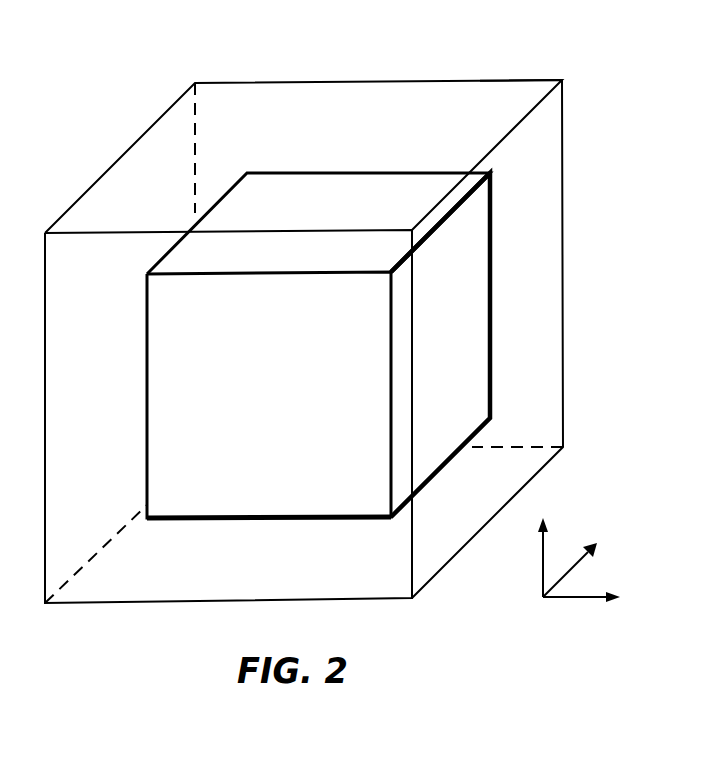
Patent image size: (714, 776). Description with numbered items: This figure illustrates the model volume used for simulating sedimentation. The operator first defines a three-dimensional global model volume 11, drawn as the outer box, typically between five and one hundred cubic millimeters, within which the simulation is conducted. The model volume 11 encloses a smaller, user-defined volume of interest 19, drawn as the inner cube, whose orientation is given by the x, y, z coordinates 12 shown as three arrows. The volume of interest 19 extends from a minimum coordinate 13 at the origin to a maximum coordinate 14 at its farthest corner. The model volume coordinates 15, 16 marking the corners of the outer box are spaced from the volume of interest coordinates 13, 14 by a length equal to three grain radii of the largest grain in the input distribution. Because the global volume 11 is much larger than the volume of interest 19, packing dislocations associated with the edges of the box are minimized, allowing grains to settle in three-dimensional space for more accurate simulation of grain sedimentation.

The model volume 11 is at (562, 220).
The x, y, z coordinates 12 is at (562, 597).
The minimum coordinate 13 is at (148, 520).
The maximum coordinate 14 is at (490, 173).
The model volume coordinate 15 is at (45, 603).
The model volume coordinate 16 is at (562, 80).
The volume of interest 19 is at (492, 274).